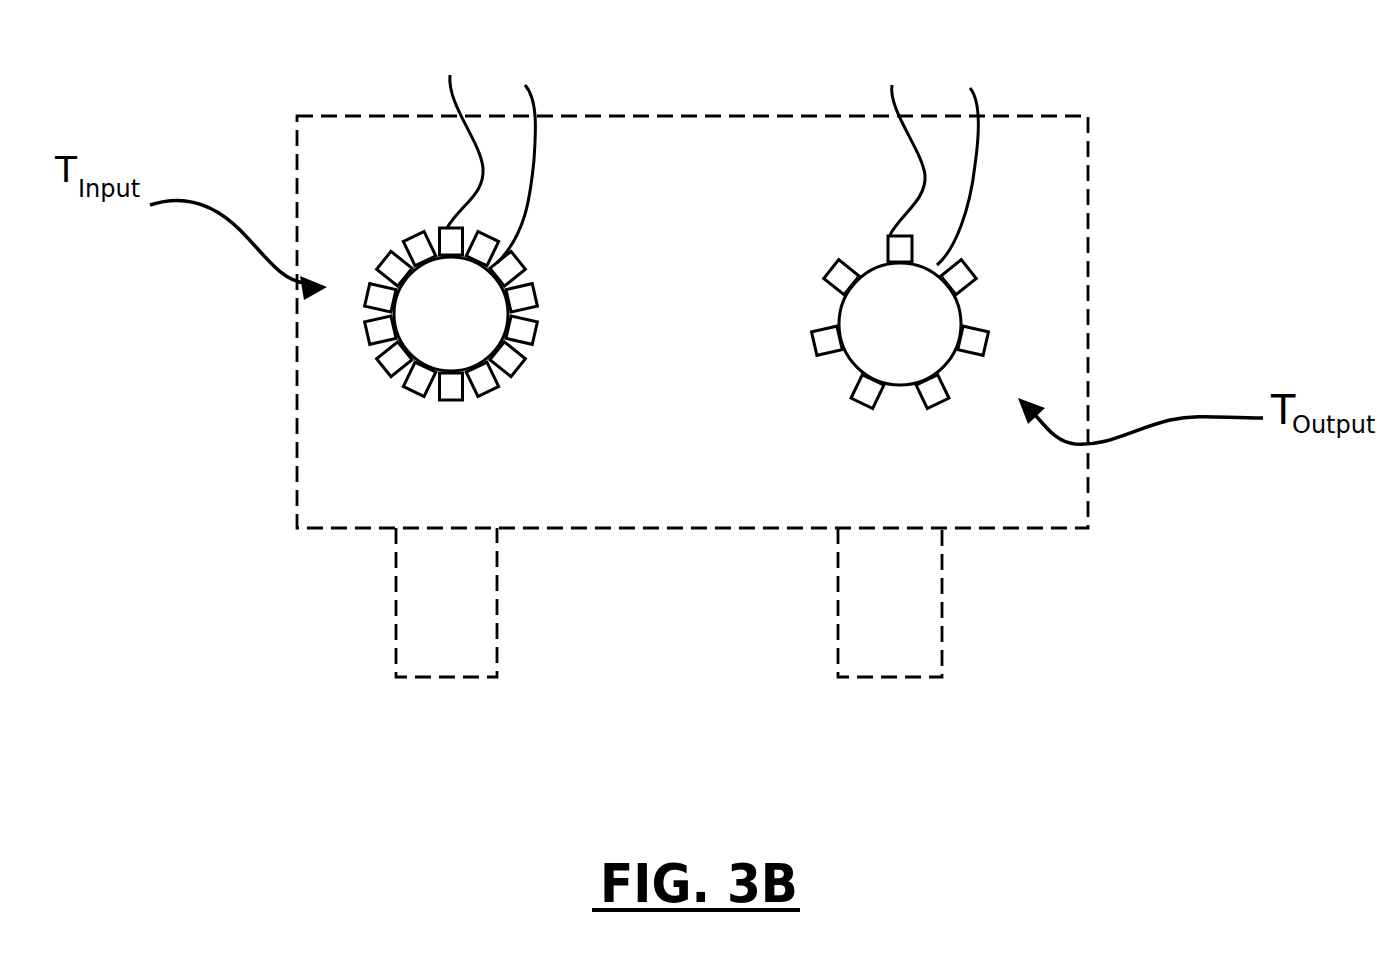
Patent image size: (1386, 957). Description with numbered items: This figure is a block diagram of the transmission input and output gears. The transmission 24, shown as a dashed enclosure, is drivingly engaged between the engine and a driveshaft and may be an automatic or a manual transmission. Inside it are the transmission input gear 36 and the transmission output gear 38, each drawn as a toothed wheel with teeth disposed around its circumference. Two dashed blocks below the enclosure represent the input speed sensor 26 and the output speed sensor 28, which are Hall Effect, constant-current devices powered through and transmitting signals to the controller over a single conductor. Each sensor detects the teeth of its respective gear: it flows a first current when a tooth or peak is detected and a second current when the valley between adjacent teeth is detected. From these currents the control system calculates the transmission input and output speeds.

The transmission 24 is at (1087, 250).
The input speed sensor 26 is at (396, 623).
The output speed sensor 28 is at (838, 613).
The transmission input gear 36 is at (470, 323).
The transmission output gear 38 is at (892, 330).